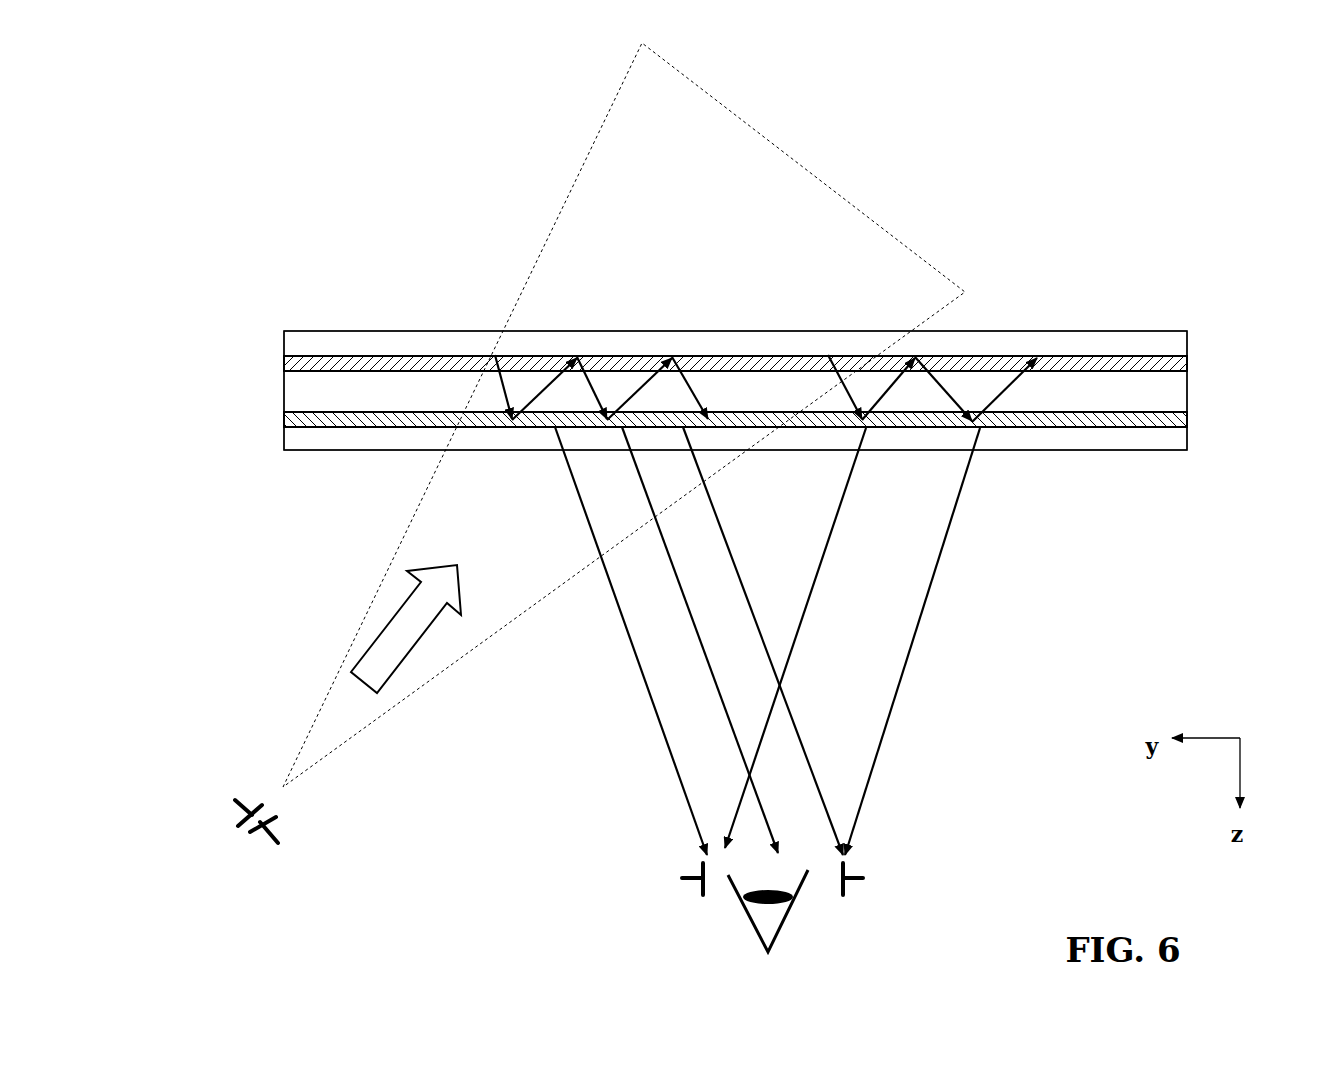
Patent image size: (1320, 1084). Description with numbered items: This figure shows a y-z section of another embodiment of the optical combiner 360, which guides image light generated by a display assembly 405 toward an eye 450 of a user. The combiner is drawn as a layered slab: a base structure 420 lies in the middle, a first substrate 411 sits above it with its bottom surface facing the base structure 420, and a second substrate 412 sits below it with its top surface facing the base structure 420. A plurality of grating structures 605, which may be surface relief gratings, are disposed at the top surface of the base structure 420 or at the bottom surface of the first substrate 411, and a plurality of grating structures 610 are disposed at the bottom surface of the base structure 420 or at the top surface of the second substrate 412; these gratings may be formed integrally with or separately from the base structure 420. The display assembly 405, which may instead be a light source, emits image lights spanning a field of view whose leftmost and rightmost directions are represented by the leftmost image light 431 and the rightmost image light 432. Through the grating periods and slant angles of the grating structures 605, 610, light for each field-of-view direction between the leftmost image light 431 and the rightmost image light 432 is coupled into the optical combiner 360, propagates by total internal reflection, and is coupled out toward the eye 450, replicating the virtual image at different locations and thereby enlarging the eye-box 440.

The optical combiner 360 is at (398, 196).
The grating structures 605 is at (385, 365).
The grating structures 610 is at (367, 420).
The first substrate 411 is at (285, 345).
The second substrate 412 is at (292, 438).
The base structure 420 is at (285, 403).
The leftmost image light 431 is at (360, 625).
The rightmost image light 432 is at (417, 688).
The display assembly 405 is at (257, 843).
The eye-box 440 is at (697, 883).
The eye 450 is at (788, 920).